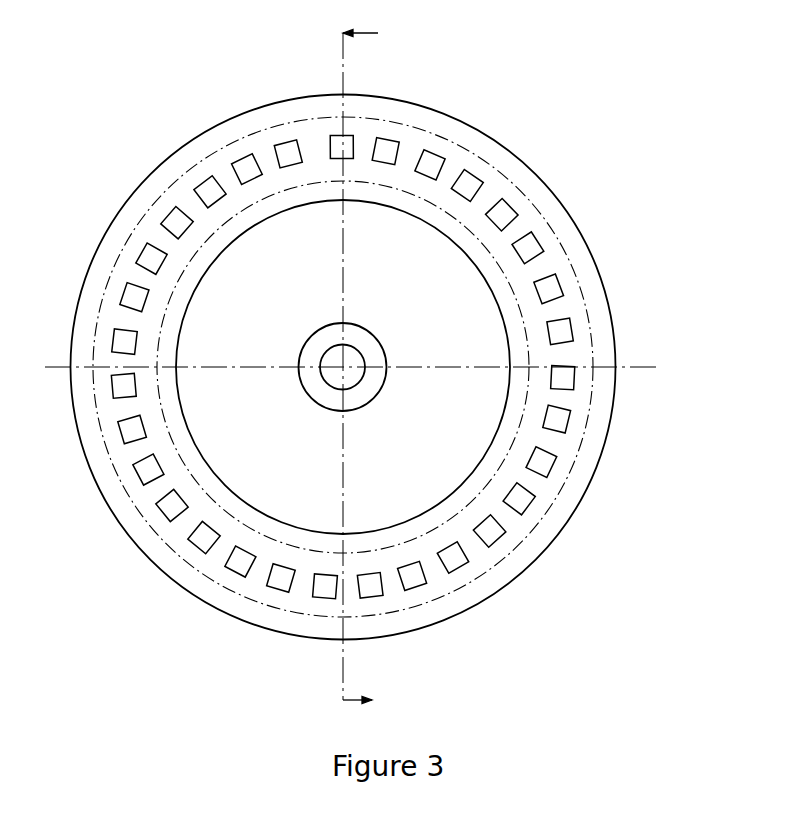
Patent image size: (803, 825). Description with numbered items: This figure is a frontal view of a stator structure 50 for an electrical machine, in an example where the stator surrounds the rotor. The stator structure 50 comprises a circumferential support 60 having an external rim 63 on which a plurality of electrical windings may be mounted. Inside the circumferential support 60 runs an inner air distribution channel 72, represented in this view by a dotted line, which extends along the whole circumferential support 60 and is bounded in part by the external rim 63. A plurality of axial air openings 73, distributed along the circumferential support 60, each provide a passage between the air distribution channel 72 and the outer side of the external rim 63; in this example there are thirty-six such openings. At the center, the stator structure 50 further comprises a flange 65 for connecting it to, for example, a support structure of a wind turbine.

The stator structure 50 is at (531, 100).
The circumferential support 60 is at (538, 195).
The external rim 63 is at (505, 587).
The flange 65 is at (303, 388).
The air distribution channel 72 is at (592, 392).
The axial air openings 73 is at (568, 418).